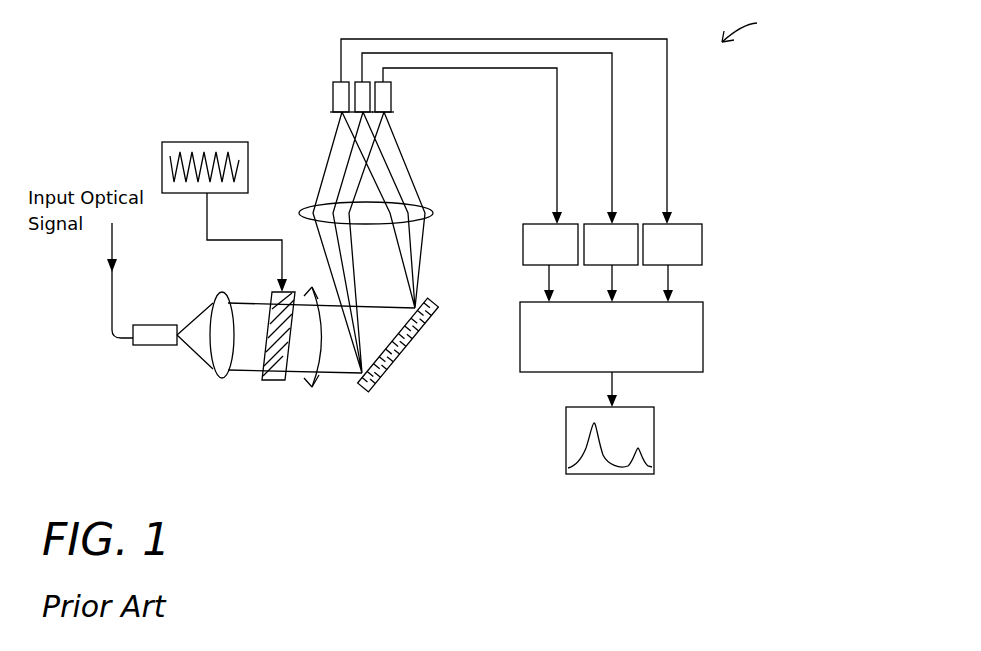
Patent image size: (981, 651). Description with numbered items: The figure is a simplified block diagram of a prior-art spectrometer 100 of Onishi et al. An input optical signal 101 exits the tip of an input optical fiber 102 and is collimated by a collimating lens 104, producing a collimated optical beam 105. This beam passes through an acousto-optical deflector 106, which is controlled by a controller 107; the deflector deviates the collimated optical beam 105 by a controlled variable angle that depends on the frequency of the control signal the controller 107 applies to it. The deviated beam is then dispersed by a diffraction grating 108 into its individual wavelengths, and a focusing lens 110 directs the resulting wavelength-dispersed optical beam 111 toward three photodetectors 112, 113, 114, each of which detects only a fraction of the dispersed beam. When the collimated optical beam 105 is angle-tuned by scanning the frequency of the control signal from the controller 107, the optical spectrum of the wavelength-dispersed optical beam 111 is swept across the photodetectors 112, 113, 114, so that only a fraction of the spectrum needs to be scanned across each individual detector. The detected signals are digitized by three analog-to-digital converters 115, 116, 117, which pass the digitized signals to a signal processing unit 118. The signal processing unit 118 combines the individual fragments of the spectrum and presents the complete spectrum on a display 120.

The spectrometer 100 is at (760, 28).
The input optical signal 101 is at (112, 268).
The input optical fiber 102 is at (163, 337).
The collimating lens 104 is at (222, 378).
The collimated optical beam 105 is at (250, 327).
The acousto-optical deflector 106 is at (277, 381).
The controller 107 is at (197, 140).
The diffraction grating 108 is at (401, 360).
The focusing lens 110 is at (422, 205).
The wavelength-dispersed optical beam 111 is at (395, 157).
The photodetector 112 is at (332, 103).
The photodetector 113 is at (358, 80).
The photodetector 114 is at (392, 96).
The analog-to-digital converter 115 is at (533, 222).
The analog-to-digital converter 116 is at (592, 222).
The analog-to-digital converter 117 is at (696, 222).
The signal processing unit 118 is at (688, 343).
The display 120 is at (654, 430).